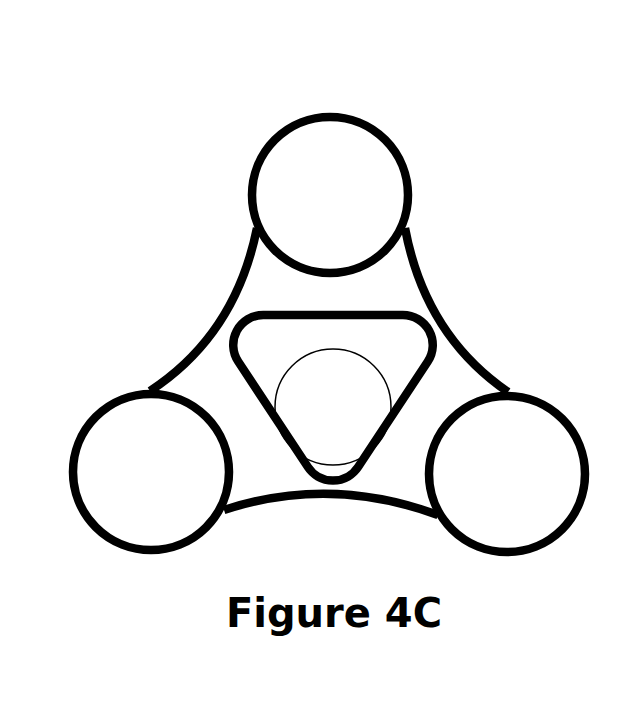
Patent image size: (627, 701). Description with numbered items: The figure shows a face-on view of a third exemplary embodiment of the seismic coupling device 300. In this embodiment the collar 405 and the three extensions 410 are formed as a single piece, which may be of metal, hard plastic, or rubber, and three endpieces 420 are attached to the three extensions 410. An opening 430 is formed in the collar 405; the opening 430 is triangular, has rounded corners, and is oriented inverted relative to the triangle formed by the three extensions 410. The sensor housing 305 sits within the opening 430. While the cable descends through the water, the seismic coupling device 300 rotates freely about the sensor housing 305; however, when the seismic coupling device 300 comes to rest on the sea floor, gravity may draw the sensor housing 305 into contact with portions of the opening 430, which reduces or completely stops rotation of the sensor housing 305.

The seismic coupling device 300 is at (206, 115).
The sensor housing 305 is at (316, 416).
The collar 405 is at (427, 283).
The extensions 410 is at (329, 371).
The endpieces 420 is at (411, 163).
The opening 430 is at (412, 344).